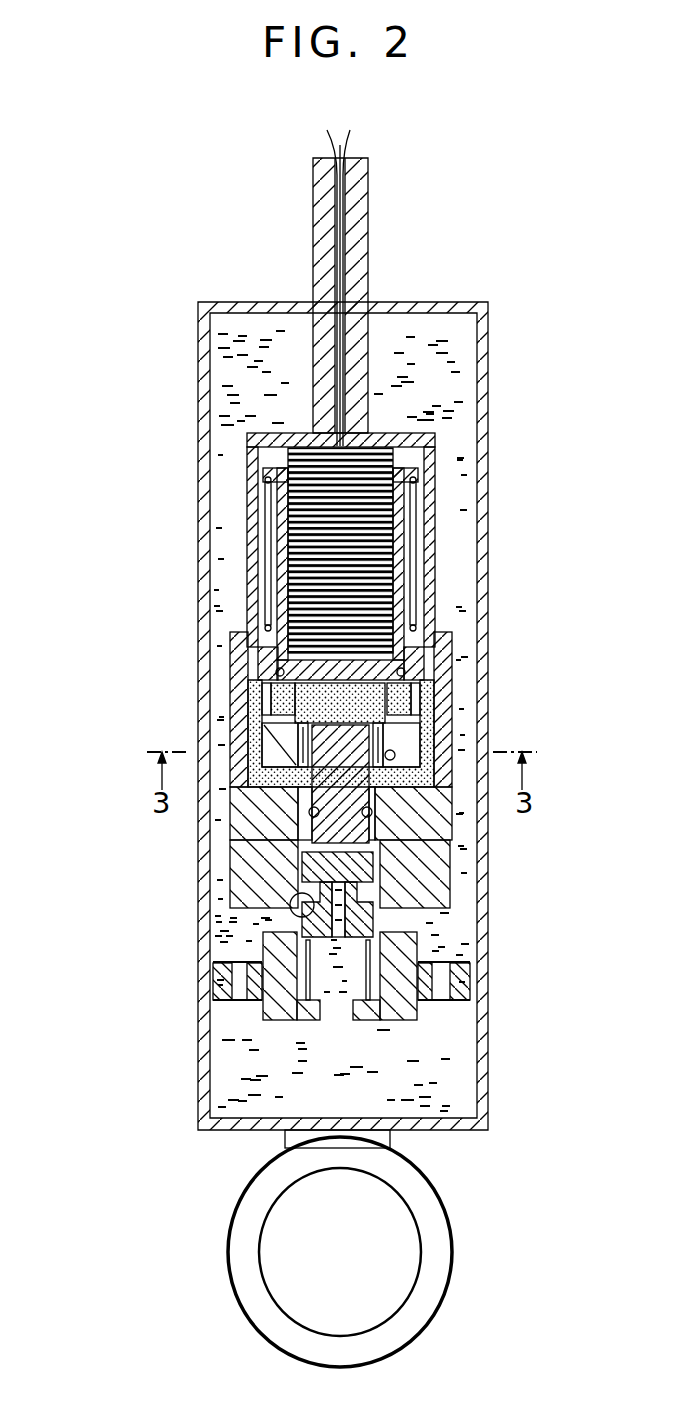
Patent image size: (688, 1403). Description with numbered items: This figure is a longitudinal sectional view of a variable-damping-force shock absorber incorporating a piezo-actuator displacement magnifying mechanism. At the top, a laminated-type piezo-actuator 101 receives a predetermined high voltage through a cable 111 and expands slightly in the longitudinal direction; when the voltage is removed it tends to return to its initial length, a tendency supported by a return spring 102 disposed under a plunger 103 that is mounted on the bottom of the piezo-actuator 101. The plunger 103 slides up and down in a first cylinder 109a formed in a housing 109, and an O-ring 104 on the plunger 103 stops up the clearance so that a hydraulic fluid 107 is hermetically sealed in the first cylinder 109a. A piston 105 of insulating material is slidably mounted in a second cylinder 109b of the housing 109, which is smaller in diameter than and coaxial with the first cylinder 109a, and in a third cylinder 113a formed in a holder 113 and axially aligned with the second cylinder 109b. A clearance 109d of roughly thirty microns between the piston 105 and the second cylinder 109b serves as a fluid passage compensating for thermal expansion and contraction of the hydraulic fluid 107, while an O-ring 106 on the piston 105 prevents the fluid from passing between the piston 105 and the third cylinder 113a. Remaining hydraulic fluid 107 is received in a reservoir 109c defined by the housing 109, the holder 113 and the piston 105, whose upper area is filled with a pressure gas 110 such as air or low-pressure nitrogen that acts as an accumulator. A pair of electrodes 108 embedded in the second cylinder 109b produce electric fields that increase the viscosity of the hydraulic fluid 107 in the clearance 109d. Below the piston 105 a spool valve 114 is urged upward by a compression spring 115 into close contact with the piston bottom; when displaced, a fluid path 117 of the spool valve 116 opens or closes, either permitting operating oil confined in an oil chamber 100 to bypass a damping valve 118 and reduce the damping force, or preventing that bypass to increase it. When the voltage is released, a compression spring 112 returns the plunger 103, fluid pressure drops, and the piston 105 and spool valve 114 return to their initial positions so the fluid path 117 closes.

The oil chamber 100 is at (478, 1077).
The piezo-actuator 101 is at (373, 478).
The return spring 102 is at (413, 527).
The plunger 103 is at (370, 663).
The O-ring 104 is at (245, 672).
The piston 105 is at (428, 828).
The O-ring 106 is at (300, 822).
The hydraulic fluid 107 is at (278, 662).
The electrodes 108 is at (312, 803).
The housing 109 is at (418, 752).
The first cylinder 109a is at (385, 700).
The second cylinder 109b is at (395, 748).
The reservoir 109c is at (275, 745).
The clearance 109d is at (252, 732).
The pressure gas 110 is at (262, 655).
The cable 111 is at (352, 132).
The compression spring 112 is at (265, 700).
The holder 113 is at (440, 858).
The third cylinder 113a is at (447, 895).
The spool valve 114 is at (435, 905).
The compression spring 115 is at (470, 1002).
The spool valve 116 is at (245, 880).
The fluid path 117 is at (292, 911).
The damping valve 118 is at (225, 993).